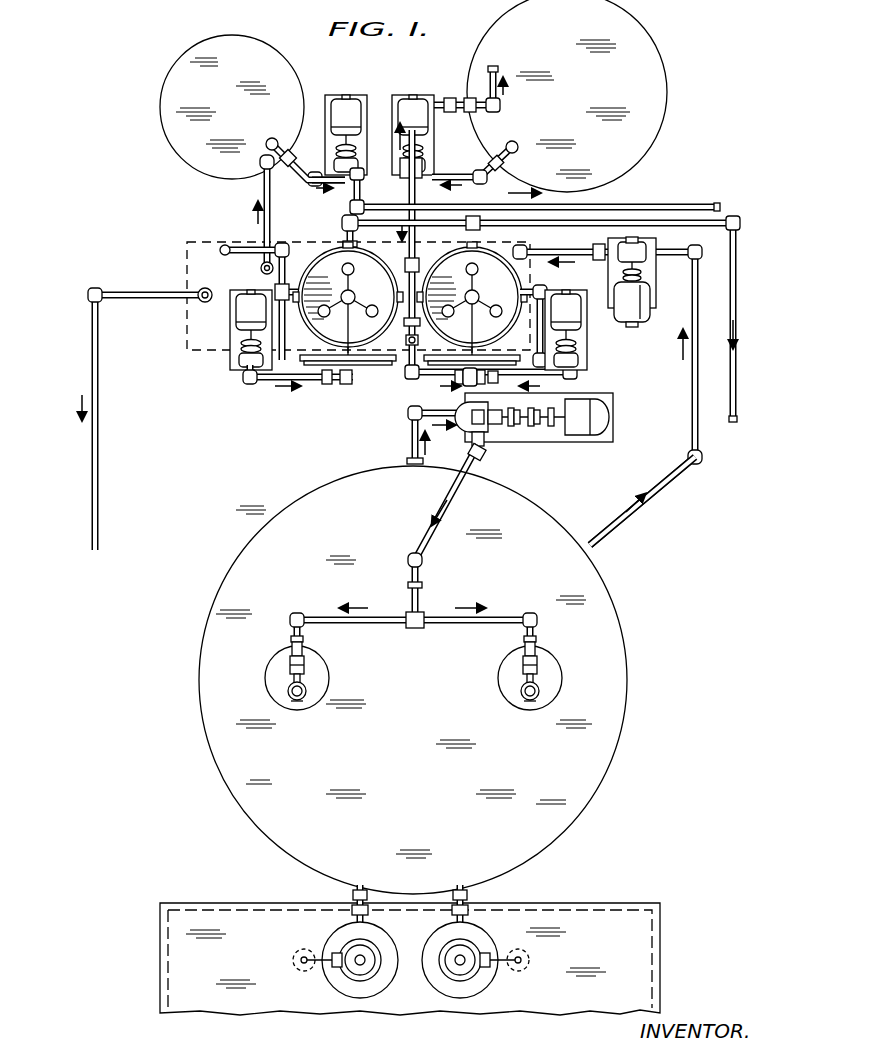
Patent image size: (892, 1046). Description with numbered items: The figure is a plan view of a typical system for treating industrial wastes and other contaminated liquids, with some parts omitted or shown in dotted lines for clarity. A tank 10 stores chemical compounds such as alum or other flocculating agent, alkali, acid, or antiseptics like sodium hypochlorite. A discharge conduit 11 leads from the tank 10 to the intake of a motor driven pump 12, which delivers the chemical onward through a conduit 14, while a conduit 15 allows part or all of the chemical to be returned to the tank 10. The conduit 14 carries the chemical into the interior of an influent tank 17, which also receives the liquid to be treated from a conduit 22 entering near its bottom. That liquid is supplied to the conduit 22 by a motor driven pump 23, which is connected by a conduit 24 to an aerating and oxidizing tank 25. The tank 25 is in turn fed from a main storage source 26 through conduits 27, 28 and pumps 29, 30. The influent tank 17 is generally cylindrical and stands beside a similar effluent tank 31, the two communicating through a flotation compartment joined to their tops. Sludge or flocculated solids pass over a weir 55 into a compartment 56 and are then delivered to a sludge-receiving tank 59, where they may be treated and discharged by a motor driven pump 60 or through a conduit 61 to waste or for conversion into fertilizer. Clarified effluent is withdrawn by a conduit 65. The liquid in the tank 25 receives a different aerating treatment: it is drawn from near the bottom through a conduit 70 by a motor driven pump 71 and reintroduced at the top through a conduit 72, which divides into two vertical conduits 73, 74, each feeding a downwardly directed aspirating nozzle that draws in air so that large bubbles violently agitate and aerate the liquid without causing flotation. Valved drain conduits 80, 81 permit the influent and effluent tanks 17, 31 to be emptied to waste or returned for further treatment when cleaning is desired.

The tank 10 is at (658, 84).
The discharge conduit 11 is at (468, 176).
The motor driven pump 12 is at (425, 176).
The conduit 14 is at (408, 280).
The conduit 15 is at (436, 102).
The influent tank 17 is at (452, 330).
The conduit 22 is at (580, 252).
The motor driven pump 23 is at (640, 248).
The conduit 24 is at (660, 500).
The aerating and oxidizing tank 25 is at (628, 662).
The main storage source 26 is at (634, 918).
The conduit 27 is at (465, 920).
The conduit 28 is at (356, 920).
The pump 29 is at (460, 968).
The pump 30 is at (360, 968).
The effluent tank 31 is at (358, 336).
The weir 55 is at (276, 266).
The compartment 56 is at (250, 258).
The sludge-receiving tank 59 is at (168, 93).
The motor driven pump 60 is at (338, 168).
The conduit 61 is at (710, 204).
The conduit 65 is at (98, 440).
The conduit 70 is at (410, 440).
The motor driven pump 71 is at (488, 430).
The conduit 72 is at (430, 538).
The vertical conduit 73 is at (540, 658).
The vertical conduit 74 is at (290, 658).
The valved drain conduit 80 is at (545, 301).
The valved drain conduit 81 is at (345, 222).